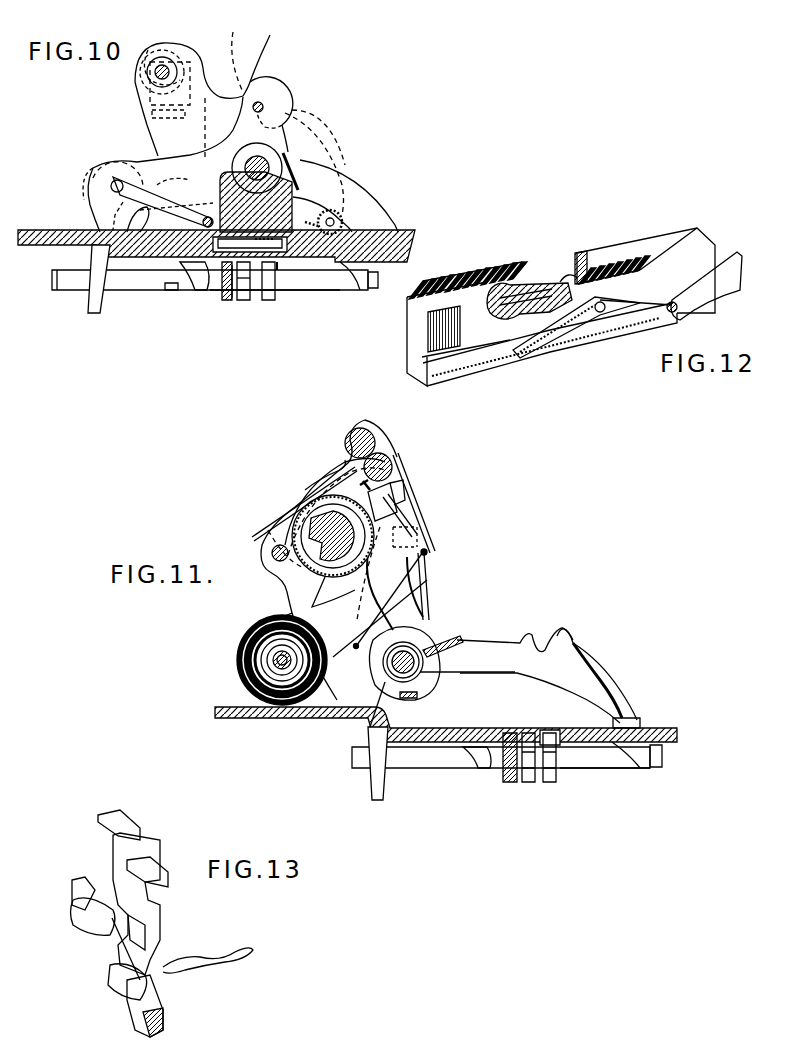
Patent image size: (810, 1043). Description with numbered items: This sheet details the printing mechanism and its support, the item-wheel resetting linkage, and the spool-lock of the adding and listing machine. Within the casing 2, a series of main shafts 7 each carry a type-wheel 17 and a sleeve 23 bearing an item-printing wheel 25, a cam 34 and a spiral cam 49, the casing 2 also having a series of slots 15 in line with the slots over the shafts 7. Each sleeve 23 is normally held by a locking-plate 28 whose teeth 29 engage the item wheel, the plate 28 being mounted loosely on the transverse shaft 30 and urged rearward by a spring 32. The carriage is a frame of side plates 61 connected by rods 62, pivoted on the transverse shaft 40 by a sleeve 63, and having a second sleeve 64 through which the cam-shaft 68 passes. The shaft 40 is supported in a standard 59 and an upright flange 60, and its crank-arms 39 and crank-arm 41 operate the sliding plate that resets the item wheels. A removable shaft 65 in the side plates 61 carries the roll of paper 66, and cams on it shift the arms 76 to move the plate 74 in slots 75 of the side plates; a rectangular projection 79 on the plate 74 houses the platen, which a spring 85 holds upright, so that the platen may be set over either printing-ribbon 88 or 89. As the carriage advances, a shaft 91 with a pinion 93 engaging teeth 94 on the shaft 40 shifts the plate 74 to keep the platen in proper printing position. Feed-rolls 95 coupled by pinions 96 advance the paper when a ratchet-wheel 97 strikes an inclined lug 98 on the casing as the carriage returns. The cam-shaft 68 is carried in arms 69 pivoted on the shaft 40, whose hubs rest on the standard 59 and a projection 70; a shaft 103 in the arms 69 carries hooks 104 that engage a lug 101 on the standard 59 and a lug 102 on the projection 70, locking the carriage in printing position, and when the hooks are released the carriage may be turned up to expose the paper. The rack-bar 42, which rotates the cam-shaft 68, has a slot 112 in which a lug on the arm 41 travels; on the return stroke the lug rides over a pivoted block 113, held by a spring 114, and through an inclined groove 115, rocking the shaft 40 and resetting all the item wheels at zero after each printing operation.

In FIG. 10, the casing 2 is at (380, 236).
In FIG. 11, the casing 2 is at (450, 735).
In FIG. 10, the main shafts 7 is at (148, 274).
In FIG. 11, the main shafts 7 is at (430, 752).
In FIG. 11, the slots or openings 15 is at (545, 736).
In FIG. 10, the type-wheel 17 is at (243, 300).
In FIG. 11, the type-wheel 17 is at (528, 782).
In FIG. 10, the sleeve 23 is at (320, 282).
In FIG. 11, the sleeve 23 is at (608, 758).
In FIG. 10, the type or printing wheel 25 is at (268, 300).
In FIG. 11, the type or printing wheel 25 is at (550, 782).
In FIG. 13, the locking-plate 28 is at (155, 900).
In FIG. 13, the teeth 29 is at (158, 865).
In FIG. 13, the transverse shaft 30 is at (145, 1002).
In FIG. 13, the spring 32 is at (200, 957).
In FIG. 10, the cam 34 is at (356, 292).
In FIG. 11, the cam 34 is at (645, 768).
In FIG. 10, the crank-arms 39 is at (94, 296).
In FIG. 11, the crank-arms 39 is at (370, 772).
In FIG. 10, the transverse shaft 40 is at (111, 188).
In FIG. 11, the transverse shaft 40 is at (400, 660).
In FIG. 12, the crank-arm 41 is at (718, 290).
In FIG. 12, the rack-bar 42 is at (660, 240).
In FIG. 10, the spiral cam 49 is at (200, 285).
In FIG. 11, the spiral cam 49 is at (483, 768).
In FIG. 11, the standard 59 is at (495, 640).
In FIG. 10, the upright flange 60 is at (378, 205).
In FIG. 10, the side plates 61 is at (160, 140).
In FIG. 11, the side plates 61 is at (287, 588).
In FIG. 11, the bolts or rods 62 is at (430, 556).
In FIG. 11, the sleeve 63 is at (385, 683).
In FIG. 11, the sleeve 64 is at (300, 522).
In FIG. 10, the removable shaft 65 is at (166, 68).
In FIG. 11, the removable shaft 65 is at (236, 672).
In FIG. 11, the roll of paper 66 is at (295, 507).
In FIG. 10, the cam-shaft 68 is at (264, 162).
In FIG. 11, the cam-shaft 68 is at (328, 520).
In FIG. 10, the arms 69 is at (178, 175).
In FIG. 11, the arms 69 is at (395, 608).
In FIG. 10, the projection 70 is at (300, 196).
In FIG. 10, the movable plate 74 is at (279, 262).
In FIG. 11, the movable plate 74 is at (408, 520).
In FIG. 10, the slots 75 is at (220, 205).
In FIG. 11, the slots 75 is at (432, 546).
In FIG. 11, the arms 76 is at (327, 602).
In FIG. 11, the rectangular projection 79 is at (395, 490).
In FIG. 11, the spring 85 is at (370, 483).
In FIG. 10, the printing-ribbon 88 is at (222, 296).
In FIG. 10, the printing-ribbon 89 is at (253, 300).
In FIG. 11, the shaft 91 is at (415, 580).
In FIG. 11, the pinion 93 is at (458, 642).
In FIG. 11, the teeth 94 is at (420, 668).
In FIG. 11, the feed-rolls 95 is at (383, 453).
In FIG. 10, the pinions 96 is at (338, 212).
In FIG. 11, the ratchet-wheel 97 is at (350, 435).
In FIG. 11, the inclined lug 98 is at (632, 720).
In FIG. 11, the lug 101 is at (570, 636).
In FIG. 10, the lug 102 is at (292, 176).
In FIG. 10, the shaft 103 is at (262, 103).
In FIG. 11, the shaft 103 is at (272, 553).
In FIG. 11, the hooks 104 is at (320, 480).
In FIG. 12, the slots 112 is at (480, 355).
In FIG. 12, the pivoted block 113 is at (585, 350).
In FIG. 12, the spring 114 is at (537, 286).
In FIG. 12, the inclined groove 115 is at (625, 252).